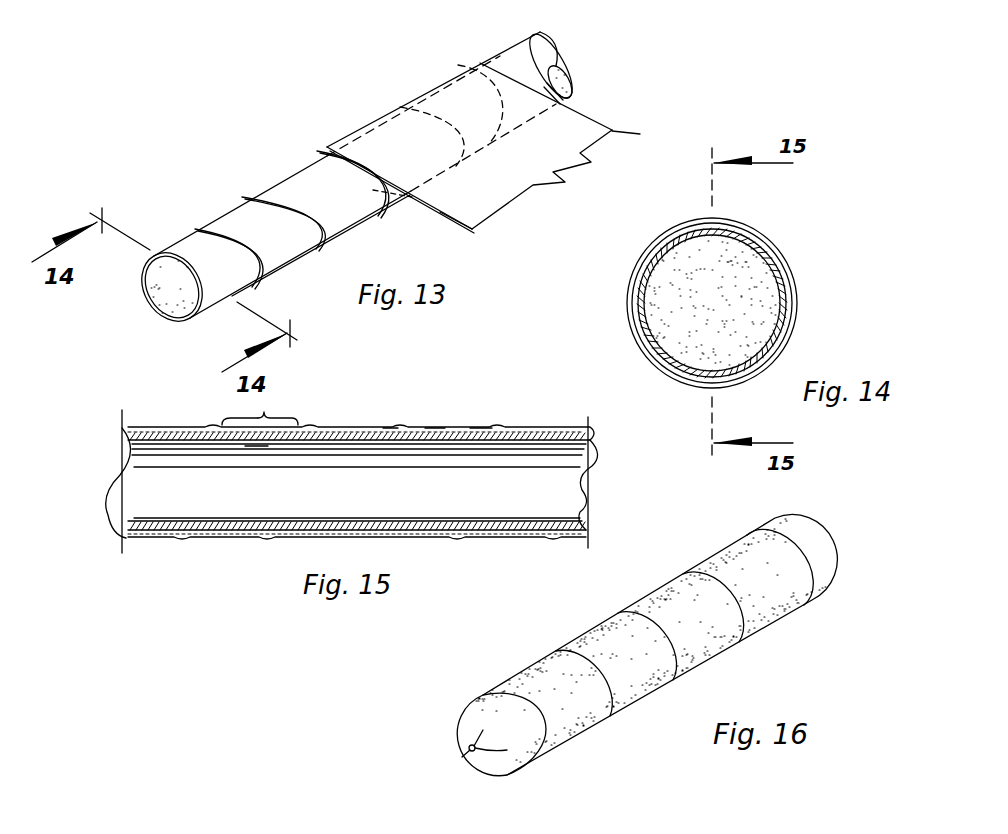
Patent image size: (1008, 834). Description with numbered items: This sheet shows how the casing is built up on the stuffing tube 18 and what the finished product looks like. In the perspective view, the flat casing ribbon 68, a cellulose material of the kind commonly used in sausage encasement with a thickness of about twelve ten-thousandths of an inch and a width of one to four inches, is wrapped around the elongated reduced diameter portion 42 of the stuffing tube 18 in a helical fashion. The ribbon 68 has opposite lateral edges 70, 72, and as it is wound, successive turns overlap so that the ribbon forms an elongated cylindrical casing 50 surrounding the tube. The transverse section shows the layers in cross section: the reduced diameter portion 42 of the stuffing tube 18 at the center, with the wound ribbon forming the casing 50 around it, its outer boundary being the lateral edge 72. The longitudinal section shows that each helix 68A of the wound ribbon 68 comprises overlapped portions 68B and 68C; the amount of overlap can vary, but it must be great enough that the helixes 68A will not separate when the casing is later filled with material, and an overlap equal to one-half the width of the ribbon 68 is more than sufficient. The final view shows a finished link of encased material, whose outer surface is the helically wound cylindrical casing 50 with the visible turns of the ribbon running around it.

In FIG. 13, the stuffing tube 18 is at (568, 48).
In FIG. 14, the stuffing tube 18 is at (628, 305).
In FIG. 15, the stuffing tube 18 is at (610, 442).
In FIG. 13, the reduced diameter portion 42 is at (177, 240).
In FIG. 14, the reduced diameter portion 42 is at (640, 280).
In FIG. 15, the reduced diameter portion 42 is at (578, 470).
In FIG. 13, the cylindrical casing 50 is at (294, 178).
In FIG. 14, the cylindrical casing 50 is at (626, 332).
In FIG. 15, the cylindrical casing 50 is at (387, 430).
In FIG. 16, the cylindrical casing 50 is at (583, 637).
In FIG. 13, the casing ribbon 68 is at (573, 180).
In FIG. 15, the casing ribbon 68 is at (478, 428).
In FIG. 15, the helix 68A is at (226, 406).
In FIG. 15, the overlapped portion 68B is at (264, 411).
In FIG. 15, the overlapped portion 68C is at (256, 447).
In FIG. 13, the lateral edge 70 is at (430, 203).
In FIG. 15, the lateral edge 70 is at (390, 422).
In FIG. 13, the lateral edge 72 is at (455, 222).
In FIG. 14, the lateral edge 72 is at (668, 232).
In FIG. 15, the lateral edge 72 is at (429, 428).